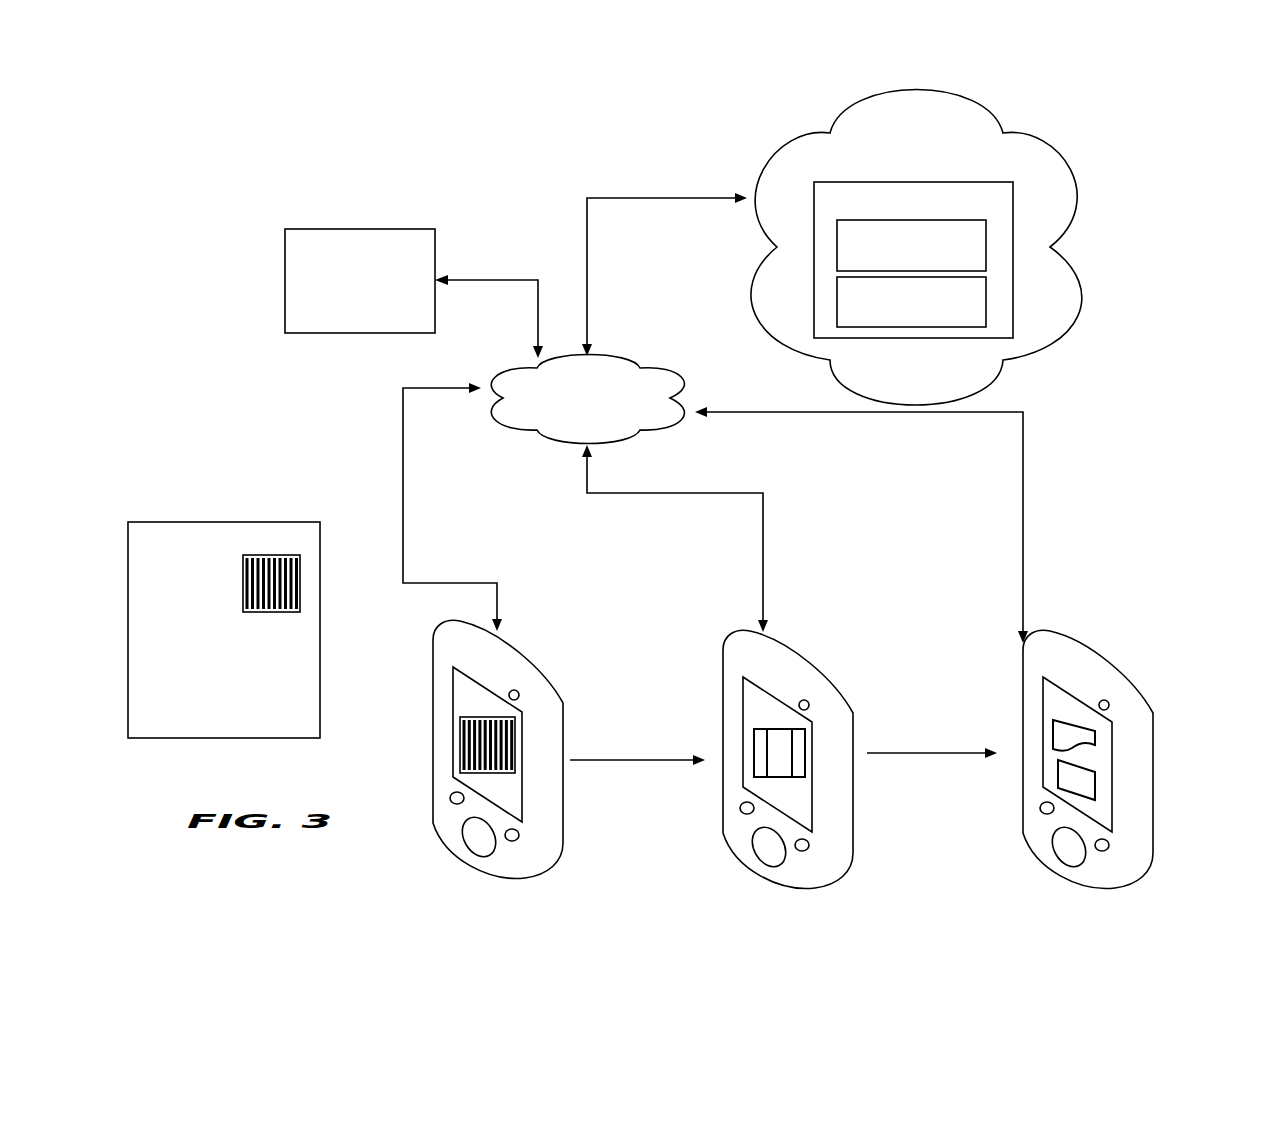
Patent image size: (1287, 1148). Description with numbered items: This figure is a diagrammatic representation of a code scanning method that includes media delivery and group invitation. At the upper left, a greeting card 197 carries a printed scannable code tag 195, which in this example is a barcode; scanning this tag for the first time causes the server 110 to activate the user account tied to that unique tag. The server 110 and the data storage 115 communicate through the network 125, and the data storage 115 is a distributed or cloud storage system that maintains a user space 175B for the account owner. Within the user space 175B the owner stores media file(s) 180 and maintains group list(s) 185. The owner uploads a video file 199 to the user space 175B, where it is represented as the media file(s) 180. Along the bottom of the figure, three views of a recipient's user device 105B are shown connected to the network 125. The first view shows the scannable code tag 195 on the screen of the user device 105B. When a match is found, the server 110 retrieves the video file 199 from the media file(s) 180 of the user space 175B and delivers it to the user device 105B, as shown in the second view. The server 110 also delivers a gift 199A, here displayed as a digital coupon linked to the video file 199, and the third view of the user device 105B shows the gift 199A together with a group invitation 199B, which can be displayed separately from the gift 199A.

The data storage 115 is at (930, 166).
The user space 175B is at (987, 211).
The media file(s) 180 is at (927, 265).
The group list(s) 185 is at (927, 323).
The server 110 is at (376, 301).
The network 125 is at (602, 420).
The greeting card 197 is at (305, 473).
The scannable code tag 195 is at (298, 582).
The user device 105B is at (546, 611).
The video file 199 is at (802, 752).
The gift 199A is at (1095, 735).
The group invitation 199B is at (1093, 790).